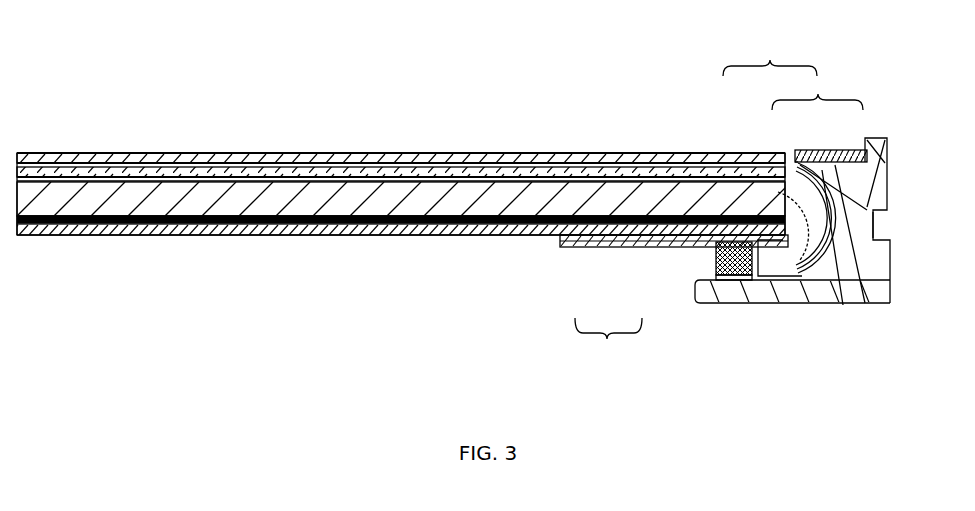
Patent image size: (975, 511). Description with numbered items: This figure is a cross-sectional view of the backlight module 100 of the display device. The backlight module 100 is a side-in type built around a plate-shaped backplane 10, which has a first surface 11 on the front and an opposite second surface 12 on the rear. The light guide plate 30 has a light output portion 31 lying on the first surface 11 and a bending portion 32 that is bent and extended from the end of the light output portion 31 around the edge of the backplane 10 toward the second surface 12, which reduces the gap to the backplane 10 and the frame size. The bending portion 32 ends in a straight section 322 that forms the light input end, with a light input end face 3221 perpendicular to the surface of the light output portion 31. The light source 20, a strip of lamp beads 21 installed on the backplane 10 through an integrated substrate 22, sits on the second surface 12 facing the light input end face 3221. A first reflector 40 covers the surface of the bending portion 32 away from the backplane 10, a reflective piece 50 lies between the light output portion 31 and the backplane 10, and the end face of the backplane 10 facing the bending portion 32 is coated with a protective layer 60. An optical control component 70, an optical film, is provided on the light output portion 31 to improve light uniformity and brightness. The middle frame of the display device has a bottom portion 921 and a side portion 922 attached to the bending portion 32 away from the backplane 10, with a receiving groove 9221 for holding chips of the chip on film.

The backlight module 100 is at (434, 24).
The optical control component 70 is at (330, 168).
The backplane 10 is at (508, 232).
The reflective piece 50 is at (578, 214).
The first surface 11 is at (280, 218).
The second surface 12 is at (377, 236).
The integrated substrate 22 is at (610, 248).
The lamp beads 21 is at (715, 263).
The light source 20 is at (608, 342).
The protective layer 60 is at (724, 285).
The light input end face 3221 is at (751, 265).
The first reflector 40 is at (803, 282).
The light output portion 31 is at (700, 200).
The light guide plate 30 is at (770, 55).
The bending portion 32 is at (840, 160).
The straight section 322 is at (767, 212).
The side portion 922 is at (886, 160).
The receiving groove 9221 is at (876, 222).
The bottom portion 921 is at (829, 305).